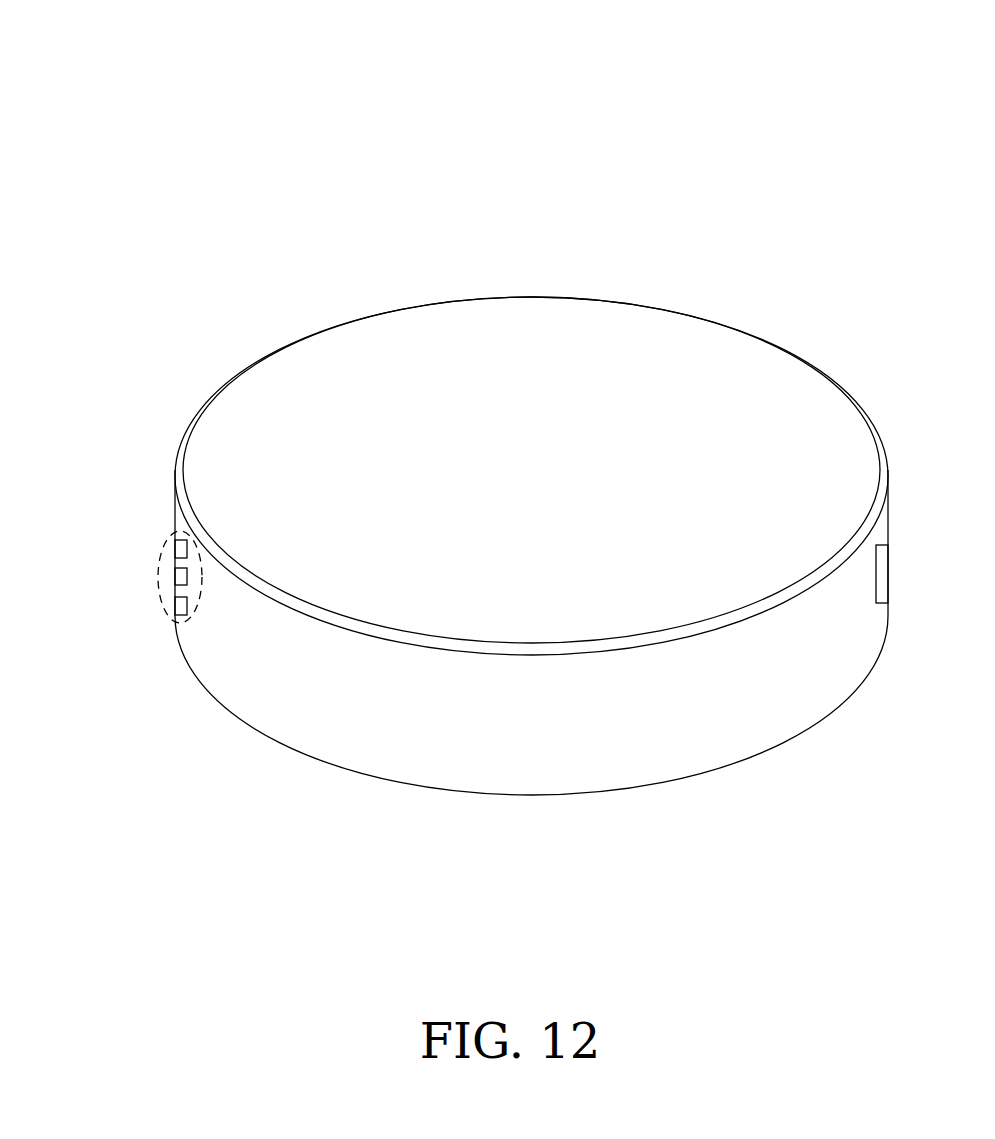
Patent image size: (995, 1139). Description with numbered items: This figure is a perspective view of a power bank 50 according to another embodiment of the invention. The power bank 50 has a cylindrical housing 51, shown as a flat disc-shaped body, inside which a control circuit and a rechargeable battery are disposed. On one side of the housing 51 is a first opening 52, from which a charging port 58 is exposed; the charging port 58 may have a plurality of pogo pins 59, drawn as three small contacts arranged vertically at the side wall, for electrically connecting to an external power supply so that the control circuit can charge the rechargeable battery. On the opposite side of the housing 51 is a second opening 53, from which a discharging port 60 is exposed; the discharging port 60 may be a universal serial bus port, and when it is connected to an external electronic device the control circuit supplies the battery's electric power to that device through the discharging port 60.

The power bank 50 is at (502, 408).
The cylindrical housing 51 is at (537, 350).
The first opening 52 is at (168, 604).
The second opening 53 is at (897, 550).
The charging port 58 is at (158, 583).
The pogo pins 59 is at (185, 548).
The discharging port 60 is at (883, 577).